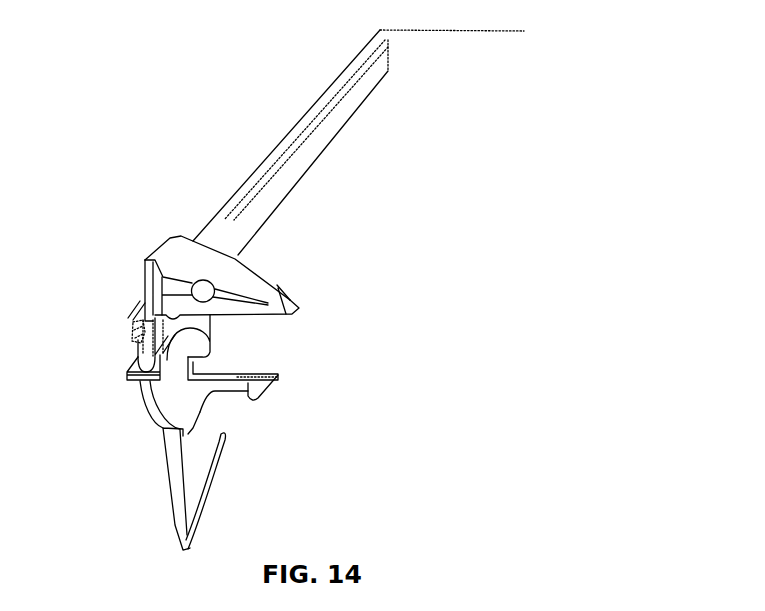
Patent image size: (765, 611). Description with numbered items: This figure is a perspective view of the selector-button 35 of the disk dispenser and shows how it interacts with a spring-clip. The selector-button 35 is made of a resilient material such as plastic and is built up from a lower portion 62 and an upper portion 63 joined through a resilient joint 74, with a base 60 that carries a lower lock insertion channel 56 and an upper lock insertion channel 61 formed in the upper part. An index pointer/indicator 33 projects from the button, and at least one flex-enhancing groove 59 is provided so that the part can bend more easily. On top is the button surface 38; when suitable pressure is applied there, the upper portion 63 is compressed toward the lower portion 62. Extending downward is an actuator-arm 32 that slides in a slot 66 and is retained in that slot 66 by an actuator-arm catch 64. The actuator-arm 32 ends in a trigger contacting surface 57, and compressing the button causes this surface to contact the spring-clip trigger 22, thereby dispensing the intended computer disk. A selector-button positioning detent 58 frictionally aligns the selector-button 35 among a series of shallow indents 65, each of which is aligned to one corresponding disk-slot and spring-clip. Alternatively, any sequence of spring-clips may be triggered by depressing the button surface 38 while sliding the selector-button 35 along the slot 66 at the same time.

The slot 66 is at (232, 220).
The button surface 38 is at (192, 248).
The selector-button 35 is at (167, 245).
The upper lock insertion channel 61 is at (191, 279).
The flex-enhancing groove 59 is at (147, 268).
The actuator-arm 32 is at (147, 297).
The index pointer/indicator 33 is at (299, 308).
The resilient joint 74 is at (272, 294).
The upper portion 63 is at (216, 271).
The shallow indents 65 is at (140, 338).
The trigger contacting surface 57 is at (136, 345).
The selector-button positioning detent 58 is at (143, 343).
The actuator-arm catch 64 is at (140, 352).
The lower portion 62 is at (247, 311).
The base 60 is at (232, 306).
The lower lock insertion channel 56 is at (258, 398).
The spring-clip trigger 22 is at (126, 382).